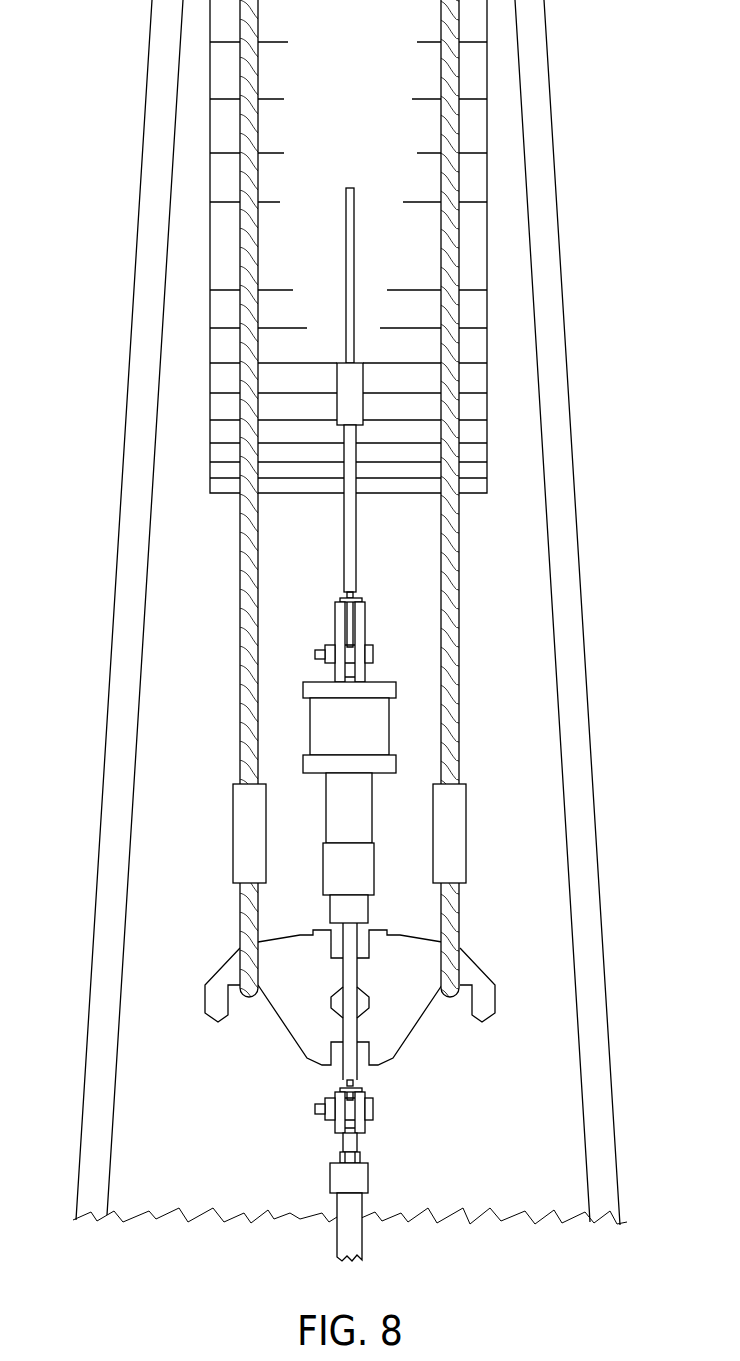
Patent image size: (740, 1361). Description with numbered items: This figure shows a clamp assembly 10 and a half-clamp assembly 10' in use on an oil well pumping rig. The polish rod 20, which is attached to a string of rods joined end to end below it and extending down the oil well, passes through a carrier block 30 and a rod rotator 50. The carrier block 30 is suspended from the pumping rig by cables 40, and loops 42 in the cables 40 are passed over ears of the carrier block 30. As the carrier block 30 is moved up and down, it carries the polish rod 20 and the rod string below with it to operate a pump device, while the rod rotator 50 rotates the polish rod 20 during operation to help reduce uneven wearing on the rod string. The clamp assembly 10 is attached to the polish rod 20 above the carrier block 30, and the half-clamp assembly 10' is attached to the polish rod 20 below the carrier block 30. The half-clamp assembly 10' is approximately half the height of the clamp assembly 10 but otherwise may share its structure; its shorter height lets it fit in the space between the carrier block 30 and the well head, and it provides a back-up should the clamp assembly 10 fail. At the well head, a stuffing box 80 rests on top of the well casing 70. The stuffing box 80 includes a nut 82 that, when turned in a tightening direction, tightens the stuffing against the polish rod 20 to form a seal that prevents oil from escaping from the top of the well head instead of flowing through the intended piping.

The clamp assembly 10 is at (368, 595).
The half-clamp assembly 10' is at (389, 1106).
The polish rod 20 is at (343, 1150).
The carrier block 30 is at (282, 1022).
The cables 40 is at (239, 634).
The loops 42 is at (242, 916).
The rod rotator 50 is at (342, 722).
The well casing 70 is at (337, 1235).
The stuffing box 80 is at (328, 1177).
The nut 82 is at (363, 1158).